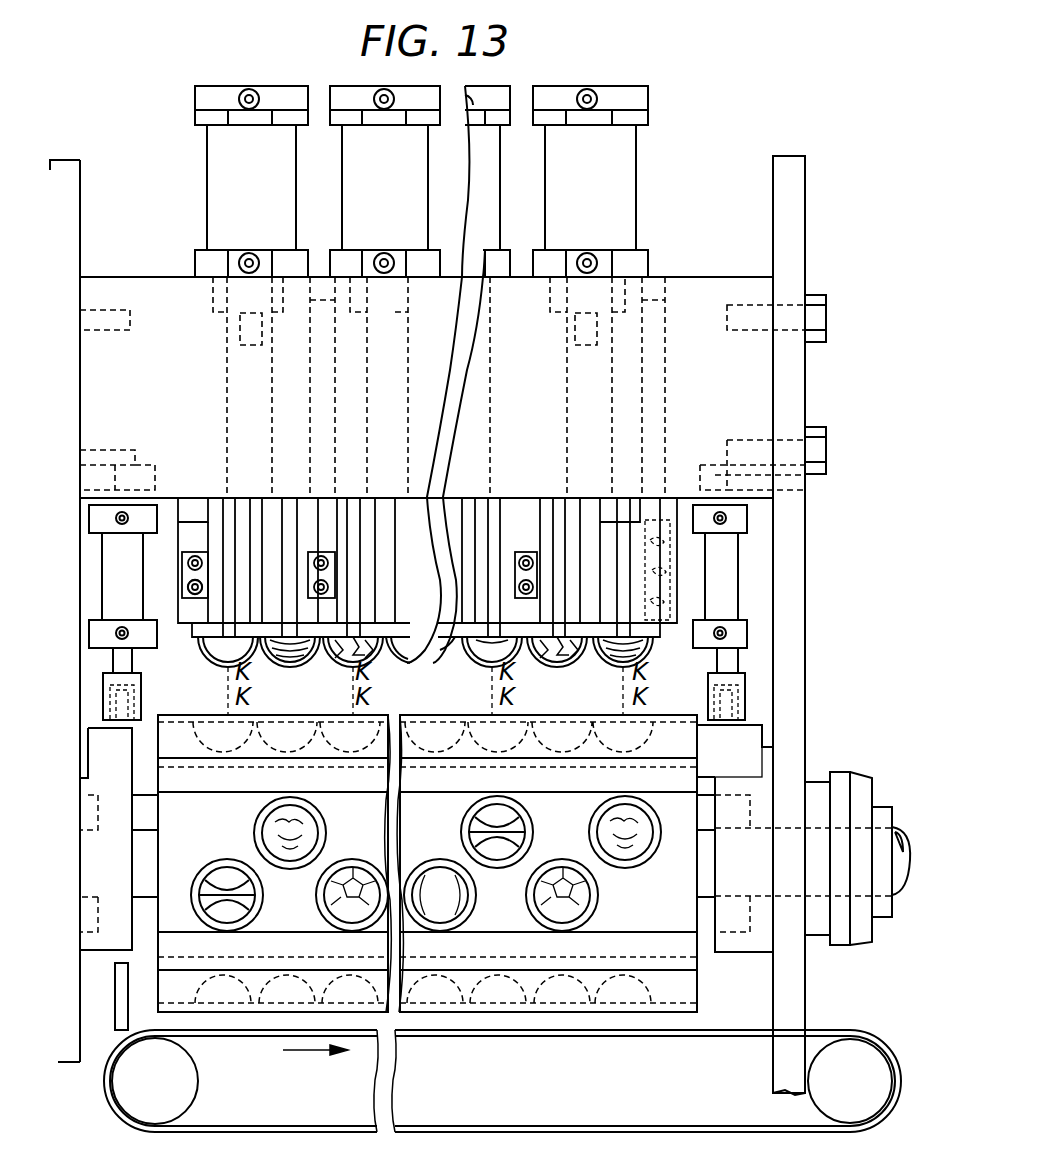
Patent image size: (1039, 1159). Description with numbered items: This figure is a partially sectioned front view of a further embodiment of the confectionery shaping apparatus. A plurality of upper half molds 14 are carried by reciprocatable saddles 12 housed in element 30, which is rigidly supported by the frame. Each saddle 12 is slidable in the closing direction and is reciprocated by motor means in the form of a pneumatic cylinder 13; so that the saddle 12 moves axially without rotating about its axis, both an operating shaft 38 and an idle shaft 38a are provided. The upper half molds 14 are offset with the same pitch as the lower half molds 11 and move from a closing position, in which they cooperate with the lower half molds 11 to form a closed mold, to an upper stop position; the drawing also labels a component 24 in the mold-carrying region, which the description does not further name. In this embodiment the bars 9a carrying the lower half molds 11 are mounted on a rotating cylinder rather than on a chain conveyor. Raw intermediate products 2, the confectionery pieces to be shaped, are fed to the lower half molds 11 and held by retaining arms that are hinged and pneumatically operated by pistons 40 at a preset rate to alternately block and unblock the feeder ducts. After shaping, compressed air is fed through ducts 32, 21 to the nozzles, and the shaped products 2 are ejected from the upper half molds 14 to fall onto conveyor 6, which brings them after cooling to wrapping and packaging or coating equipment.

The pneumatic cylinder 13 is at (218, 168).
The element 30 is at (140, 300).
The operating shaft 38 is at (230, 362).
The idle shaft 38a is at (313, 390).
The gripper rods 24 is at (232, 498).
The saddle 12 is at (188, 538).
The duct 21 is at (185, 567).
The duct 32 is at (200, 592).
The upper half mold 14 is at (197, 638).
The intermediate product 2 is at (337, 662).
The piston 40 is at (93, 637).
The bar 9a is at (665, 980).
The lower half mold 11 is at (262, 900).
The conveyor 6 is at (715, 1030).